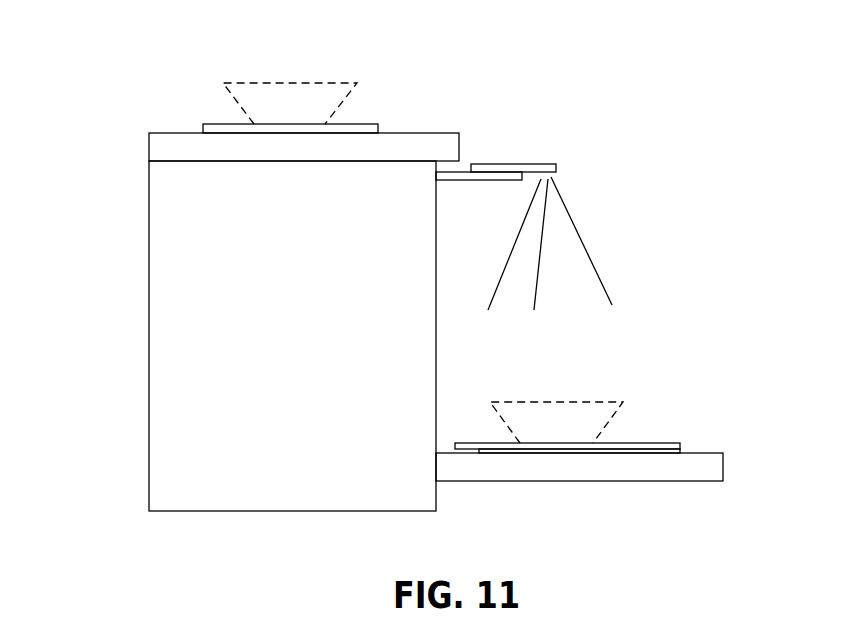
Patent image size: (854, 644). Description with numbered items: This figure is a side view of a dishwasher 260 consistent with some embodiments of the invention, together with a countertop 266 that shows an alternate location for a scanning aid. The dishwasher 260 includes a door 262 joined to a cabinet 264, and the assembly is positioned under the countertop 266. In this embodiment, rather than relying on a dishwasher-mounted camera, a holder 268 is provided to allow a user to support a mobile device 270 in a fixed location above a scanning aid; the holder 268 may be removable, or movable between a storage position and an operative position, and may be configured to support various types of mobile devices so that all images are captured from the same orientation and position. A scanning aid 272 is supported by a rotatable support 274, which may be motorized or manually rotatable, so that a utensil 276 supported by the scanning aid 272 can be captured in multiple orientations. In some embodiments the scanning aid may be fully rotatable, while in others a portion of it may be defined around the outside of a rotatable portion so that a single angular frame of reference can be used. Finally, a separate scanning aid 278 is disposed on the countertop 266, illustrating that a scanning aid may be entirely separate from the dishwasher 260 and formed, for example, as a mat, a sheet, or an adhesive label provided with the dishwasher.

The dishwasher 260 is at (143, 102).
The door 262 is at (723, 481).
The cabinet 264 is at (149, 405).
The countertop 266 is at (149, 148).
The holder 268 is at (467, 181).
The mobile device 270 is at (556, 174).
The scanning aid 272 is at (632, 443).
The rotatable support 274 is at (680, 451).
The utensil 276 is at (265, 83).
The scanning aid 278 is at (350, 124).